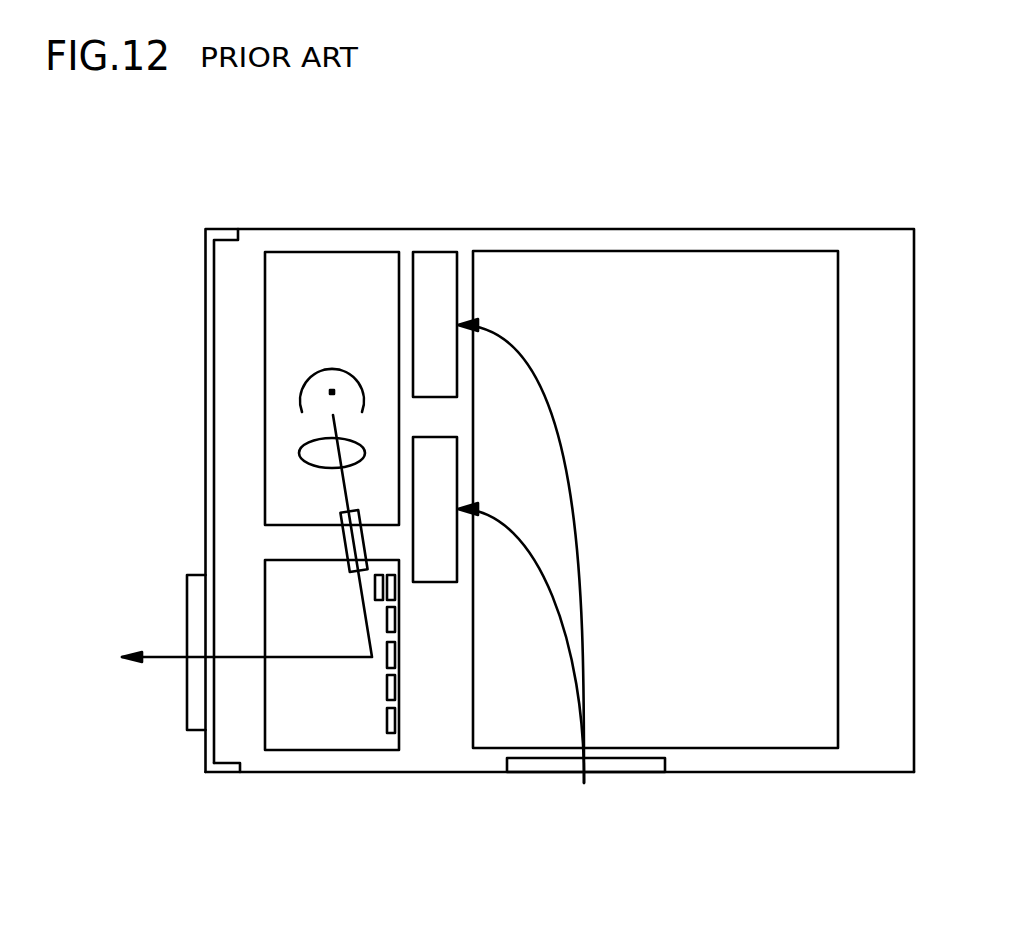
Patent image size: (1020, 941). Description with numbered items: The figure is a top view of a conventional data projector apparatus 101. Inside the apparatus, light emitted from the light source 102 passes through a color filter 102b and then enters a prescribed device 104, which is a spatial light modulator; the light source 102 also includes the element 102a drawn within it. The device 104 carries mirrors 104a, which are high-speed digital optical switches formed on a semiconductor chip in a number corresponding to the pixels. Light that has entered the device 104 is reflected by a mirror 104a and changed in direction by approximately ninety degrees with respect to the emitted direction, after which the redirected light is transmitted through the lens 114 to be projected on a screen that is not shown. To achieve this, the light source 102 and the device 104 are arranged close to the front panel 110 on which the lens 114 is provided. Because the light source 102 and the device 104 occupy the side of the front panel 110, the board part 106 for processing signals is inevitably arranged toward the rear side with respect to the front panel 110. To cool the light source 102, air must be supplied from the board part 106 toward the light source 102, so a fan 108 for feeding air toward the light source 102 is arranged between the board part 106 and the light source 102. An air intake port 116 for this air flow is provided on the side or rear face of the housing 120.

The data projector apparatus 101 is at (520, 481).
The light source 102 is at (332, 331).
The lamp 102a is at (333, 367).
The color filter 102b is at (353, 453).
The device 104 is at (332, 716).
The mirrors 104a is at (385, 688).
The board part 106 is at (773, 682).
The fan 108 is at (434, 322).
The front panel 110 is at (205, 246).
The lens 114 is at (197, 692).
The air intake port 116 is at (665, 787).
The housing 120 is at (258, 774).